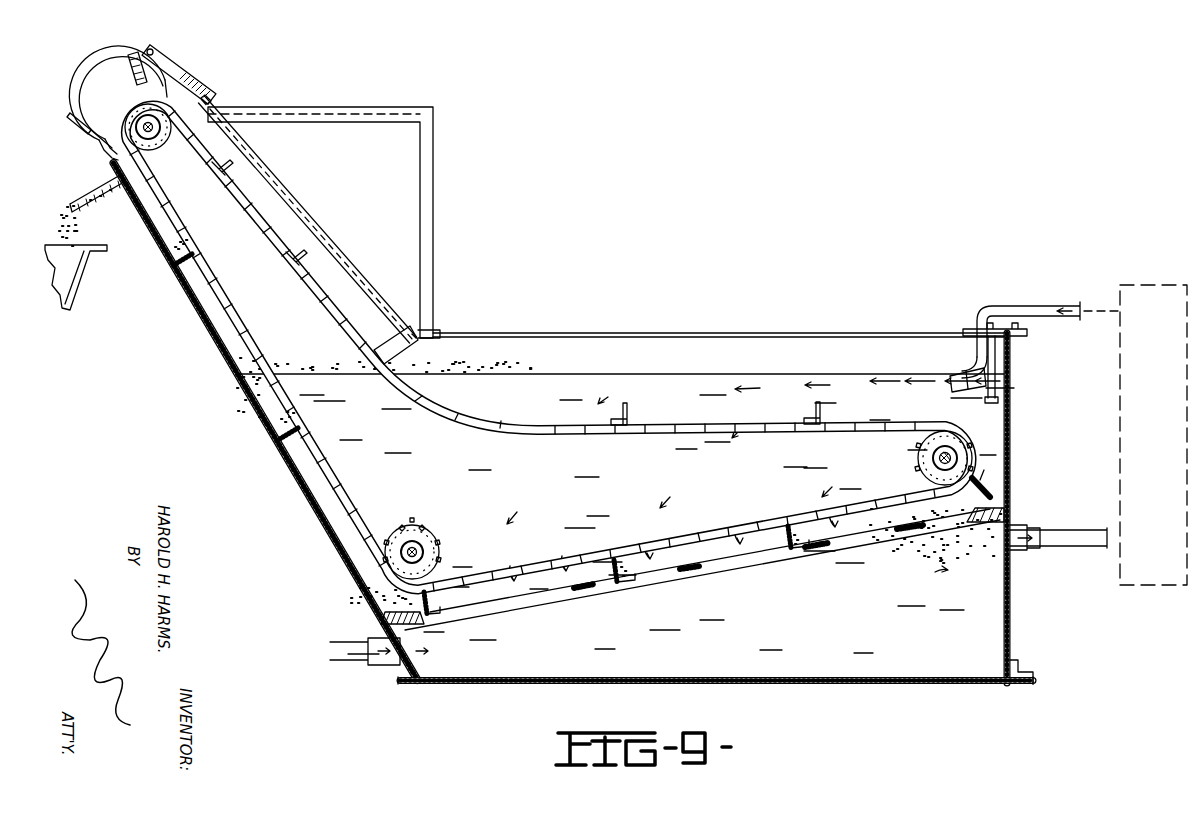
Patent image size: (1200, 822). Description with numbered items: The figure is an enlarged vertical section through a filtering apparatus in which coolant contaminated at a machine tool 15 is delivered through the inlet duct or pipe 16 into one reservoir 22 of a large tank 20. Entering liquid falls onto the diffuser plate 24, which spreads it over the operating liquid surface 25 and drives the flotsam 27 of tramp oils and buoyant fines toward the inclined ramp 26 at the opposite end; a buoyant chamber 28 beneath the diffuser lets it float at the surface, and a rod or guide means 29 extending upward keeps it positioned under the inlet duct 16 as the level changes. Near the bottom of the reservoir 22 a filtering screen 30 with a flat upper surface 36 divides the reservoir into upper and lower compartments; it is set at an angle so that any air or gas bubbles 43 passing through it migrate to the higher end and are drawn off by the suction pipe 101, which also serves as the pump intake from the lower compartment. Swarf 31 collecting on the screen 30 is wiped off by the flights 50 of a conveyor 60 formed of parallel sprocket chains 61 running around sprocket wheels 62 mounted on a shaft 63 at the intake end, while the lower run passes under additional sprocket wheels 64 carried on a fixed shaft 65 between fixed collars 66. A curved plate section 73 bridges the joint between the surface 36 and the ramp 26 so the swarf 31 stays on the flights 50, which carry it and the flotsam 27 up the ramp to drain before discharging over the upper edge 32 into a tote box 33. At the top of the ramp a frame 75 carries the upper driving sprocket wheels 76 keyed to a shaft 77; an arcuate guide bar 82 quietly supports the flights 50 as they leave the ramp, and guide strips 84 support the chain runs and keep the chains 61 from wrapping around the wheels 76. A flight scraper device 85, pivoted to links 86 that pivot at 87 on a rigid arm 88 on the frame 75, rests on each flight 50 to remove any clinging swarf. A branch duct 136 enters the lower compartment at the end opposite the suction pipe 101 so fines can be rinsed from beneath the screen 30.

The machine tool 15 is at (1133, 413).
The inlet duct or pipe 16 is at (1028, 310).
The tank 20 is at (319, 529).
The reservoir 22 is at (792, 643).
The diffuser plate 24 is at (958, 354).
The operating liquid level or surface 25 is at (597, 375).
The ramp 26 is at (232, 369).
The flotsam 27 is at (491, 375).
The buoyant chamber 28 is at (955, 388).
The rod or guide means 29 is at (1000, 373).
The filtering means or screen 30 is at (696, 584).
The swarf 31 is at (270, 426).
The upper edge of the ramp 32 is at (89, 197).
The tote box 33 is at (88, 275).
The flat upper surface 36 is at (832, 542).
The air, gas or bubbles 43 is at (988, 545).
The flights 50 is at (178, 263).
The conveyor 60 is at (525, 557).
The sprocket chains 61 is at (598, 560).
The rear drum 62 is at (925, 464).
The shaft 63 is at (938, 460).
The sprocket wheels 64 is at (430, 540).
The fixed shaft 65 is at (414, 550).
The fixed collars 66 is at (424, 553).
The curved plate section 73 is at (385, 616).
The frame 75 is at (446, 158).
The upper and driving sprocket wheels 76 is at (166, 147).
The shaft 77 is at (162, 144).
The arcuate guide bar 82 is at (186, 71).
The guide strips 84 is at (212, 130).
The flight scraper device 85 is at (105, 145).
The links 86 is at (132, 62).
The pivot 87 is at (155, 48).
The rigid arm 88 is at (200, 85).
The suction pipe or intake duct 101 is at (1090, 533).
The branch duct 136 is at (350, 655).